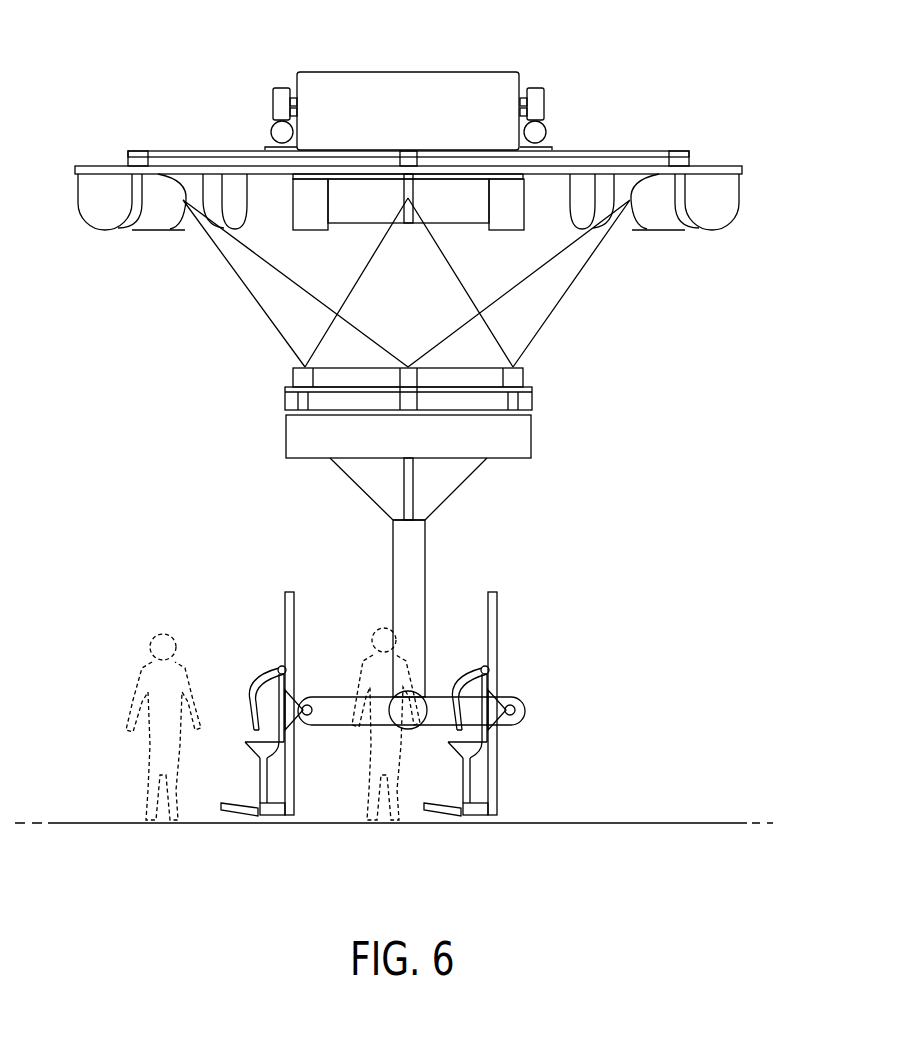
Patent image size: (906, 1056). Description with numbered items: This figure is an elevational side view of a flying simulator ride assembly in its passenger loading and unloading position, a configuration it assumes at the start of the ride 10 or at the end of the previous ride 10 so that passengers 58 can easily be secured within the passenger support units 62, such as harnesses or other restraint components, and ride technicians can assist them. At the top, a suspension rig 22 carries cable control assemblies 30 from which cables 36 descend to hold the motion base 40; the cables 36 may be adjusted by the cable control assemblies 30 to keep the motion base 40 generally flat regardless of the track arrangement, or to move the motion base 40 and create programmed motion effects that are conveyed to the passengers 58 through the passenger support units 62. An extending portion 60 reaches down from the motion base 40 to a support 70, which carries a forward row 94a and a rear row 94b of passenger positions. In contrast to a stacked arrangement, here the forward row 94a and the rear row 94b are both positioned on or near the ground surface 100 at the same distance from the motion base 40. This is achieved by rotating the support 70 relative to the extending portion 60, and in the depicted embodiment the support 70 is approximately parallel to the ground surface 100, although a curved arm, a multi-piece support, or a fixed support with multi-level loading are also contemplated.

The ride 10 is at (115, 60).
The suspension rig 22 is at (759, 192).
The cable control assembly 30 is at (730, 224).
The cable 36 is at (573, 285).
The motion base 40 is at (532, 434).
The passenger 58 is at (146, 665).
The extending portion 60 is at (425, 556).
The passenger support unit 62 is at (482, 758).
The support 70 is at (437, 695).
The forward row 94a is at (255, 641).
The rear row 94b is at (520, 660).
The ground surface 100 is at (625, 819).